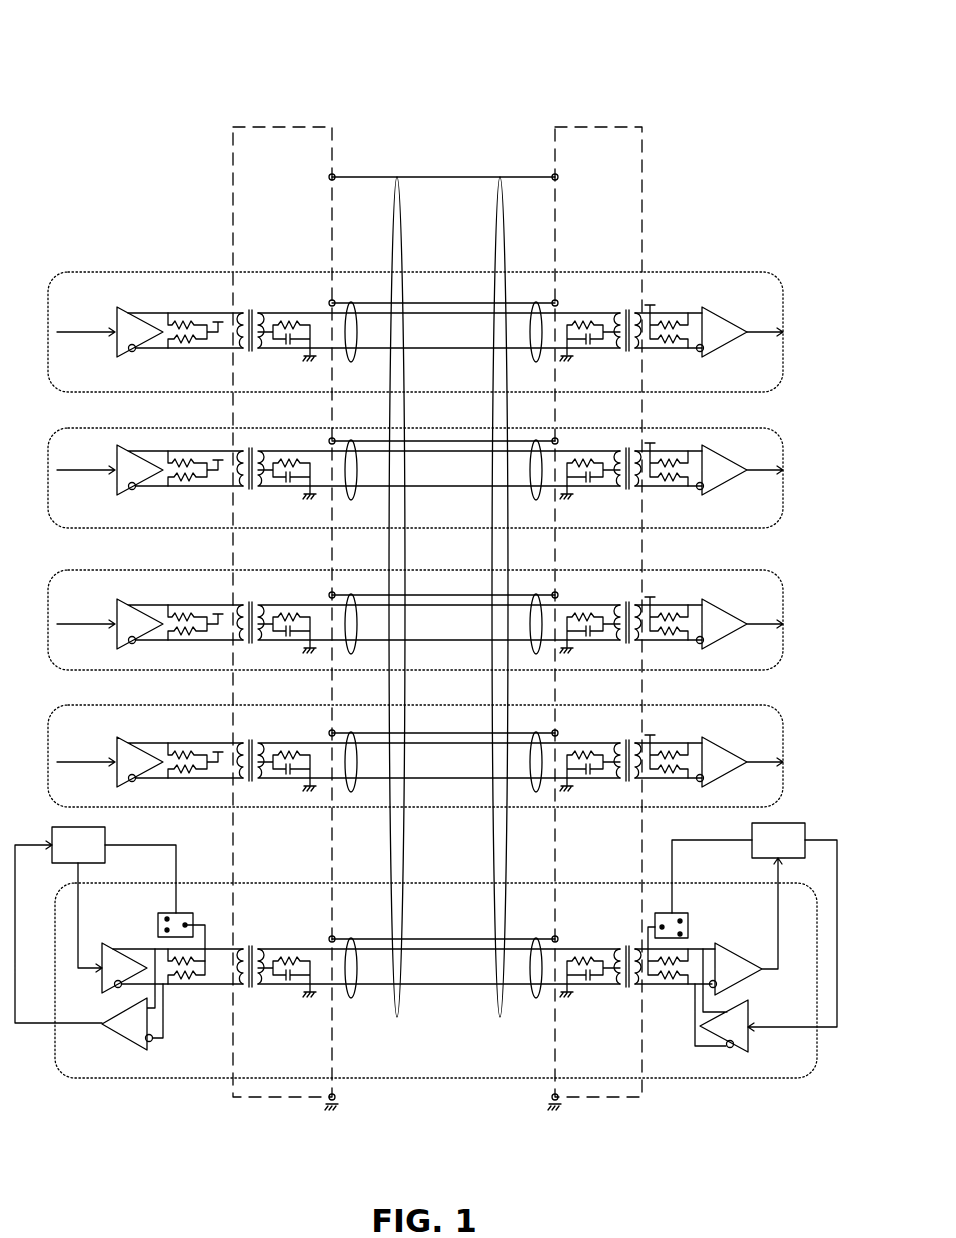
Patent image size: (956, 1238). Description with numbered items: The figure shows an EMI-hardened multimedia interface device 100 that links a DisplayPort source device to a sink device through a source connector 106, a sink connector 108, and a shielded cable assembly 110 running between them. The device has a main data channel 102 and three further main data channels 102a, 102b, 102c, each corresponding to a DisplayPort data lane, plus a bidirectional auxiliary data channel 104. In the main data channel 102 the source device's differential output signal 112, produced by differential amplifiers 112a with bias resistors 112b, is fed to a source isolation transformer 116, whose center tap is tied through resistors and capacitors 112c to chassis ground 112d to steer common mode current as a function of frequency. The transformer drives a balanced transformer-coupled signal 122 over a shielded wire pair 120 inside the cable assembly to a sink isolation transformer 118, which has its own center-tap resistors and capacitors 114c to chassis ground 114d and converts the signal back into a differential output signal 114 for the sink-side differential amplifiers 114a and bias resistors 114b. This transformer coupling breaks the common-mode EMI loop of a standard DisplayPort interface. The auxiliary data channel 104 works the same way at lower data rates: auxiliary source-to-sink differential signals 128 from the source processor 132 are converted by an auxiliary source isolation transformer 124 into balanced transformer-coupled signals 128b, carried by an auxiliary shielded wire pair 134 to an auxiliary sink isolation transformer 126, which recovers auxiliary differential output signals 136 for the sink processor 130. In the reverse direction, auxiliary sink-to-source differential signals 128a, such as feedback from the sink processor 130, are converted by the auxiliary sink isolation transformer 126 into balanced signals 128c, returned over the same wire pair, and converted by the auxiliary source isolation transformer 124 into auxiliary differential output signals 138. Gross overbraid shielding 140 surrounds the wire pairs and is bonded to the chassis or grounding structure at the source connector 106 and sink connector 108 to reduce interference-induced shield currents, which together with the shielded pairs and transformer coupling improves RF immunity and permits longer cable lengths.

The EMI-hardened multimedia interface device 100 is at (103, 44).
The main data channel 102 is at (708, 272).
The main data channel 102a is at (741, 455).
The main data channel 102b is at (741, 603).
The main data channel 102c is at (741, 741).
The auxiliary data channel 104 is at (435, 1082).
The source connector 106 is at (268, 165).
The sink connector 108 is at (586, 165).
The shielded cable assembly 110 is at (392, 158).
The differential output signal 112 is at (150, 328).
The differential amplifiers 112a is at (122, 337).
The bias resistors 112b is at (188, 352).
The resistors and capacitors 112c is at (293, 318).
The chassis ground 112d is at (307, 375).
The differential output signal 114 is at (714, 332).
The differential amplifiers 114a is at (717, 337).
The bias resistors 114b is at (667, 353).
The resistors and capacitors 114c is at (588, 318).
The chassis ground 114d is at (572, 372).
The source isolation transformer 116 is at (252, 352).
The sink isolation transformer 118 is at (625, 352).
The shielded wire pair 120 is at (353, 359).
The balanced transformer-coupled signal 122 is at (475, 333).
The auxiliary source isolation transformer 124 is at (250, 948).
The auxiliary sink isolation transformer 126 is at (625, 947).
The auxiliary source-to-sink differential signals 128 is at (148, 963).
The auxiliary sink-to-source differential signals 128a is at (697, 1017).
The balanced transformer-coupled signals 128b is at (477, 1000).
The balanced transformer-coupled signals 128c is at (414, 1023).
The sink processor 130 is at (765, 852).
The source processor 132 is at (65, 857).
The auxiliary shielded wire pair 134 is at (352, 1000).
The auxiliary differential output signals 136 is at (712, 947).
The auxiliary differential output signals 138 is at (156, 1038).
The gross overbraid shielding 140 is at (394, 215).